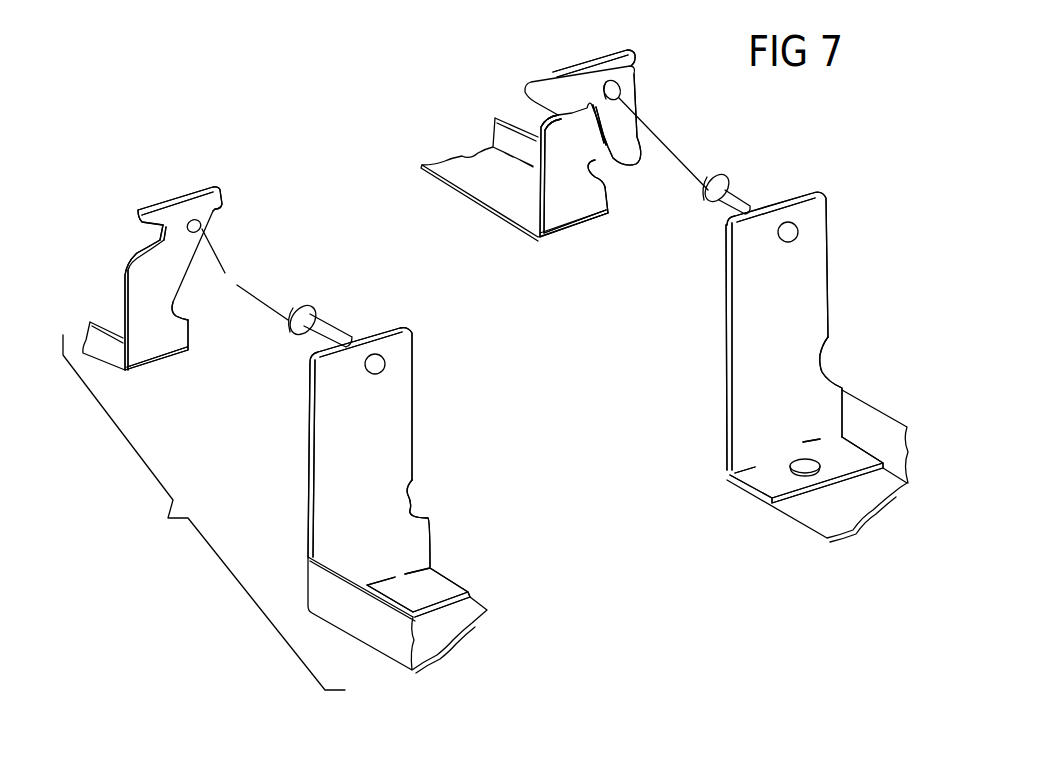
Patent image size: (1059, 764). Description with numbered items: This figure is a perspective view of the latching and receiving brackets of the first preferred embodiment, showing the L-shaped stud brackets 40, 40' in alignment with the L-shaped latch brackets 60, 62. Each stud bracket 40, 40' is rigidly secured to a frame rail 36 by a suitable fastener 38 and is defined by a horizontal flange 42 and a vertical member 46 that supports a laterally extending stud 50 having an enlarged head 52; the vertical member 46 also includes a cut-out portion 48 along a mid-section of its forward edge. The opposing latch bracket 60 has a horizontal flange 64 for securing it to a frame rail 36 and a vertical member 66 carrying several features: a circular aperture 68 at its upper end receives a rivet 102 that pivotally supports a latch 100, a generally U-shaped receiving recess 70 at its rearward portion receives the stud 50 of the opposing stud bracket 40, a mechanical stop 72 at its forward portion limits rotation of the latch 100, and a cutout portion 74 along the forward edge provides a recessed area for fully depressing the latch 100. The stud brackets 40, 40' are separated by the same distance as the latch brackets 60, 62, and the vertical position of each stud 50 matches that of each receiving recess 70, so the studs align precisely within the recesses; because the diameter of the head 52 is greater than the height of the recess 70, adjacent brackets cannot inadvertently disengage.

The frame rail 36 is at (102, 342).
The fastener 38 is at (802, 468).
The L-shaped stud bracket 40 is at (766, 356).
The L-shaped stud bracket 40' is at (346, 472).
The horizontal flange 42 is at (433, 582).
The vertical member 46 is at (343, 387).
The cut-out portion 48 is at (412, 502).
The stud 50 is at (518, 252).
The head 52 is at (288, 323).
The L-shaped latch bracket 60 is at (574, 126).
The L-shaped latch bracket 62 is at (199, 247).
The horizontal flange 64 is at (530, 214).
The vertical member 66 is at (143, 278).
The circular aperture 68 is at (201, 227).
The receiving recess 70 is at (143, 236).
The mechanical stop 72 is at (220, 203).
The cutout portion 74 is at (173, 303).
The latch 100 is at (627, 127).
The rivet 102 is at (612, 96).